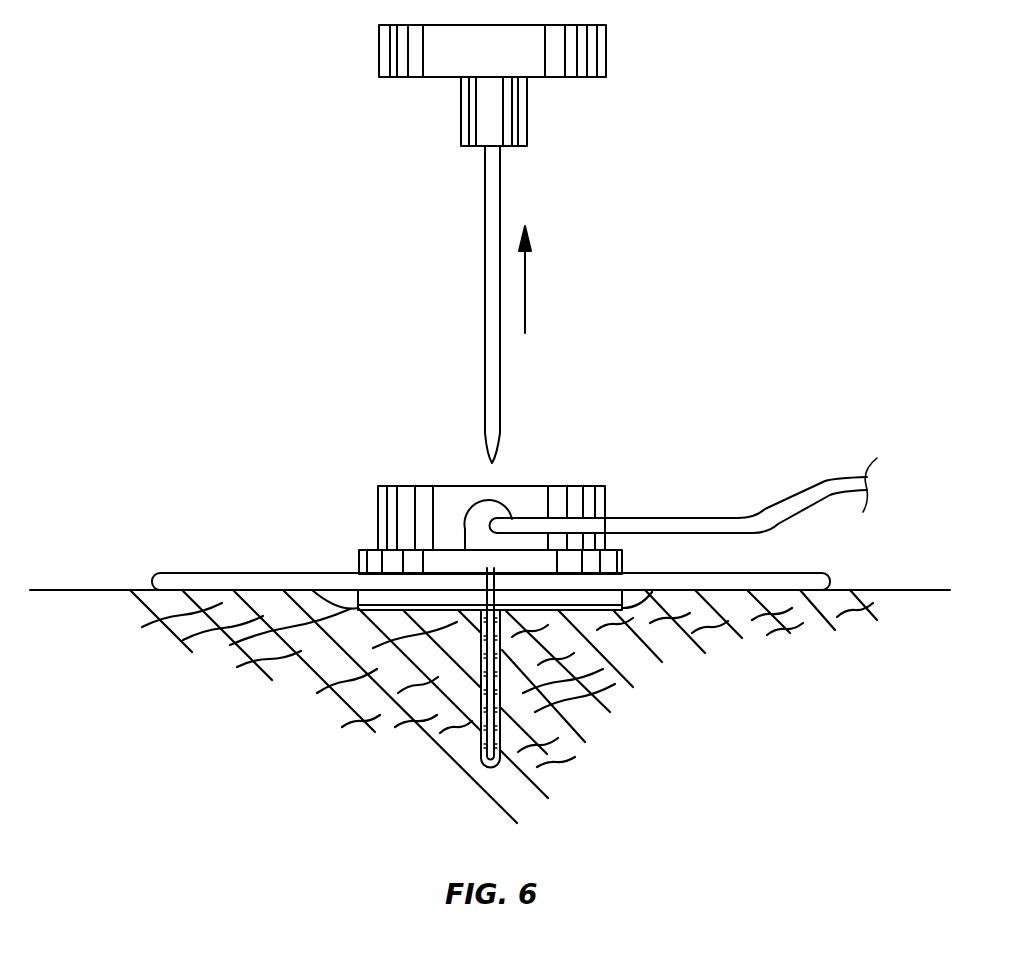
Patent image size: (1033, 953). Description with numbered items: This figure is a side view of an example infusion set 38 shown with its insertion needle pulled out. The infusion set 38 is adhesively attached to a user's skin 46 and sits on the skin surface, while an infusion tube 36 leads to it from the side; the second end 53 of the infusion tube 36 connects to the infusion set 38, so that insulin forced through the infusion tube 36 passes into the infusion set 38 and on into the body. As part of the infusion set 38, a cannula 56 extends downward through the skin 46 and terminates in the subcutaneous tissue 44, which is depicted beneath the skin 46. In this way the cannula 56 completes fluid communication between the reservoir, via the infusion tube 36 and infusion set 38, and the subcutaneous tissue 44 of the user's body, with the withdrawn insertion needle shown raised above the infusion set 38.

The infusion tube 36 is at (790, 504).
The infusion set 38 is at (637, 366).
The subcutaneous tissue 44 is at (678, 703).
The skin 46 is at (88, 590).
The second end of infusion tube 53 is at (524, 527).
The cannula 56 is at (480, 740).